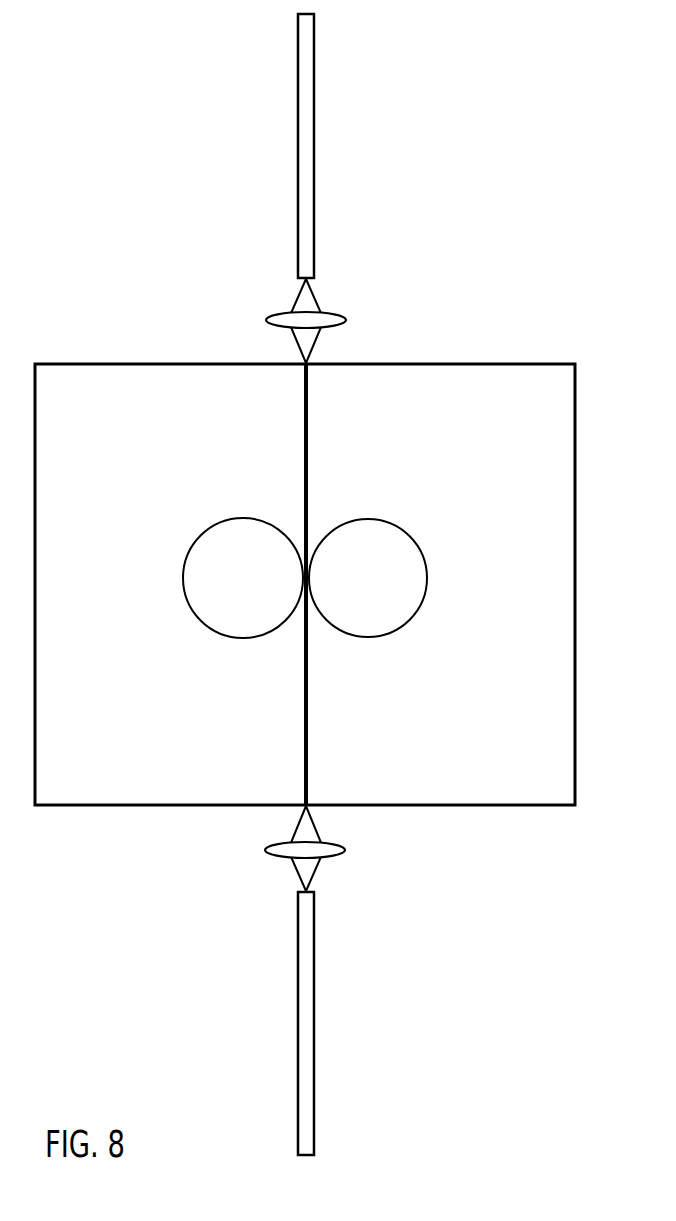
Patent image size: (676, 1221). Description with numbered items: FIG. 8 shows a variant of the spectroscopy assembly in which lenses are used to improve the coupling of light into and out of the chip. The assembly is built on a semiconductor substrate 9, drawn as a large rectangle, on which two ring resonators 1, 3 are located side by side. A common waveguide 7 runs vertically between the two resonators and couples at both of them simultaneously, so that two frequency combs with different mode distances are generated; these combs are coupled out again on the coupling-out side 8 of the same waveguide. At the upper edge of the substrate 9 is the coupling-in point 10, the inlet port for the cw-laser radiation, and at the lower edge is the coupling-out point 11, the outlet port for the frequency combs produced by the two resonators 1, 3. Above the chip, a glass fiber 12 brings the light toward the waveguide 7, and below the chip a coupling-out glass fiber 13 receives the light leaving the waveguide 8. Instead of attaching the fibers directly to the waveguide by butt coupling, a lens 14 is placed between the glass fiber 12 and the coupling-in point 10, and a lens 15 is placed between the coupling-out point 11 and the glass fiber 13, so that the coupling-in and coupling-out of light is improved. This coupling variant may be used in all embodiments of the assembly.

The ring resonator 1 is at (251, 595).
The ring resonator 3 is at (376, 595).
The common waveguide 7 is at (310, 471).
The coupling-out side of the waveguide 8 is at (310, 722).
The substrate 9 is at (73, 404).
The coupling-in point 10 is at (324, 357).
The coupling-out point 11 is at (324, 812).
The glass fiber 12 is at (307, 77).
The coupling-out glass fiber 13 is at (305, 1088).
The lens 14 is at (267, 322).
The lens 15 is at (267, 851).